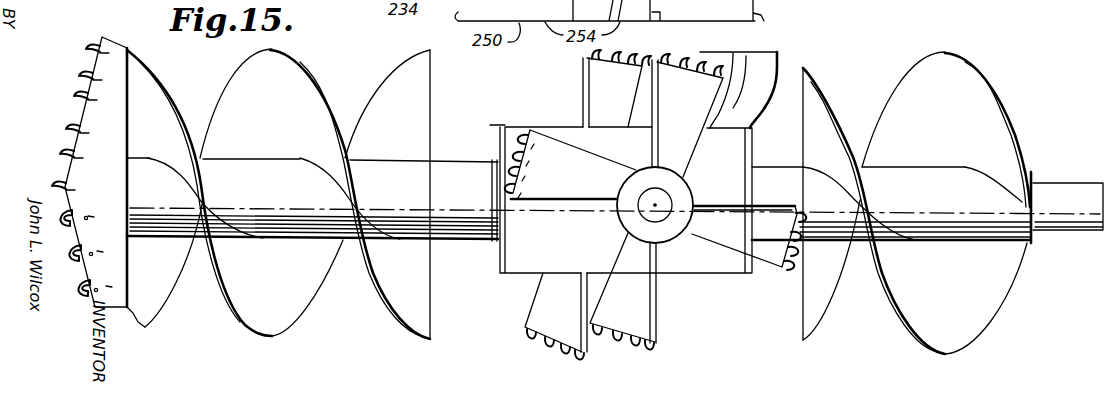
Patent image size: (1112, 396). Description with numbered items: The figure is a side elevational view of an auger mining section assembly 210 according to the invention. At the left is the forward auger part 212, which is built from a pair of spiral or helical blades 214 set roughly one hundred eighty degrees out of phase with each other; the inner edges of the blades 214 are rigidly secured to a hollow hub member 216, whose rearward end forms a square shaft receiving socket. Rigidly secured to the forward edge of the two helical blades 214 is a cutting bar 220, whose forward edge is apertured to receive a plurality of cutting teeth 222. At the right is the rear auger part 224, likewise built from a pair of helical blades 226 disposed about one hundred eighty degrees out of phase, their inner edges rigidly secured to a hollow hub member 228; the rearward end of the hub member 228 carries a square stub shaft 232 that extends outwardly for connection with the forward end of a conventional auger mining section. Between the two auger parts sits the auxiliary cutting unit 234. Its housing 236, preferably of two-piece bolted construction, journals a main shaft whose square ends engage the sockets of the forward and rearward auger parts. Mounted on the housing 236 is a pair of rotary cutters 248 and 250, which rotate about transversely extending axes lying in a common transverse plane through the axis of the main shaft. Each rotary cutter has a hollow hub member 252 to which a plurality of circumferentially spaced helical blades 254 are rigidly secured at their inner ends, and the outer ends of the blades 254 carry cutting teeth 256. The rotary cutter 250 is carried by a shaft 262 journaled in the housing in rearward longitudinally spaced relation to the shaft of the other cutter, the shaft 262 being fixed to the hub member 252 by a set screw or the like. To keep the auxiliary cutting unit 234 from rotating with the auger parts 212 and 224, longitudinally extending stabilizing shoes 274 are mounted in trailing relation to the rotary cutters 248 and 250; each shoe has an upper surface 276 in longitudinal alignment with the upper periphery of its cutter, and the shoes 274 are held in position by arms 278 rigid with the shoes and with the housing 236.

The auger mining section assembly 210 is at (838, 23).
The forward auger part 212 is at (310, 70).
The helical blades 214 is at (248, 75).
The hollow hub member 216 is at (302, 221).
The cutting bar 220 is at (76, 137).
The cutting teeth 222 is at (76, 91).
The rear auger part 224 is at (901, 82).
The helical blades 226 is at (903, 110).
The hollow hub member 228 is at (928, 227).
The stub shaft 232 is at (1046, 220).
The auxiliary cutting unit 234 is at (568, 88).
The housing 236 is at (532, 262).
The rotary cutter 248 is at (523, 329).
The rotary cutter 250 is at (660, 331).
The hollow hub member 252 is at (633, 210).
The helical blades 254 is at (647, 132).
The cutting teeth 256 is at (616, 57).
The shaft 262 is at (660, 201).
The stabilizing shoes 274 is at (748, 60).
The upper surface 276 is at (745, 52).
The arms 278 is at (730, 111).